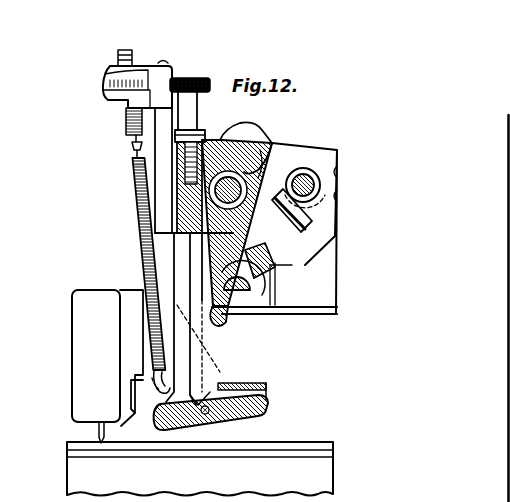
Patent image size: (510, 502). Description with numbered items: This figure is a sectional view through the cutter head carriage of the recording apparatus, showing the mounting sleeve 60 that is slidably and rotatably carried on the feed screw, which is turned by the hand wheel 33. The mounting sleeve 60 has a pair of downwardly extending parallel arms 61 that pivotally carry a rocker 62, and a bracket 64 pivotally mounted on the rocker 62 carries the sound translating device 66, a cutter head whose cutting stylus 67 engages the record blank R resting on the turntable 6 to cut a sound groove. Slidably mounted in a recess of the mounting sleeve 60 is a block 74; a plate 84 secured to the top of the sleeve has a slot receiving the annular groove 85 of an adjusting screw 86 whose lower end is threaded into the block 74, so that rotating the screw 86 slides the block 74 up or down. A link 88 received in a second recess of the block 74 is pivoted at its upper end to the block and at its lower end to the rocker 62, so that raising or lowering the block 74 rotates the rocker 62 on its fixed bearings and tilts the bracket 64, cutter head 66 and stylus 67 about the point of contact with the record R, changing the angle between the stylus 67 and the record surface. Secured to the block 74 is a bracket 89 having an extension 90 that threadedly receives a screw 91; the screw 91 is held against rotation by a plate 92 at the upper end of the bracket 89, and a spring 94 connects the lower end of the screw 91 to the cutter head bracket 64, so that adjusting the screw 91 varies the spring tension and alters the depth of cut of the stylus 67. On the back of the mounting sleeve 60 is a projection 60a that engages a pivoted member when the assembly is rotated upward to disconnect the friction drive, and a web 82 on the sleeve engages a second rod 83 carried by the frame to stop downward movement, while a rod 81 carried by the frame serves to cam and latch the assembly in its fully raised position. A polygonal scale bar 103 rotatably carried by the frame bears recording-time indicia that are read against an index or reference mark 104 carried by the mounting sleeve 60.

The turntable 6 is at (70, 474).
The record blank R is at (67, 442).
The cutting stylus 67 is at (100, 427).
The sound translating device 66 is at (83, 313).
The screw 91 is at (127, 50).
The plate 92 is at (140, 62).
The extension 90 is at (118, 100).
The bracket 89 is at (160, 212).
The annular groove 85 is at (176, 138).
The spring 94 is at (150, 247).
The block 74 is at (175, 174).
The adjusting screw 86 is at (192, 80).
The plate 84 is at (212, 140).
The link 88 is at (185, 272).
The arms 61 is at (214, 343).
The mounting sleeve 60 is at (220, 180).
The projection 60a is at (253, 138).
The hand wheel 33 is at (264, 176).
The web 82 is at (218, 328).
The rod 81 is at (313, 175).
The scale bar 103 is at (278, 256).
The index or reference mark 104 is at (292, 256).
The second rod 83 is at (272, 309).
The rocker 62 is at (230, 418).
The bracket 64 is at (216, 380).